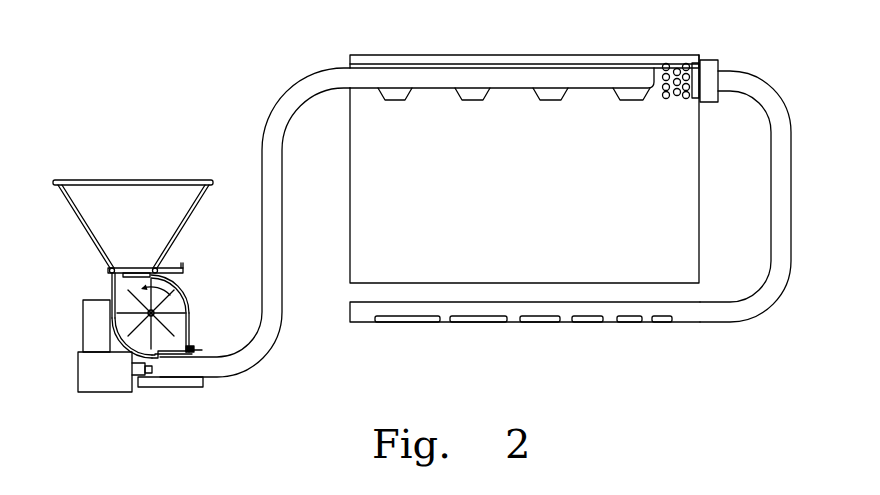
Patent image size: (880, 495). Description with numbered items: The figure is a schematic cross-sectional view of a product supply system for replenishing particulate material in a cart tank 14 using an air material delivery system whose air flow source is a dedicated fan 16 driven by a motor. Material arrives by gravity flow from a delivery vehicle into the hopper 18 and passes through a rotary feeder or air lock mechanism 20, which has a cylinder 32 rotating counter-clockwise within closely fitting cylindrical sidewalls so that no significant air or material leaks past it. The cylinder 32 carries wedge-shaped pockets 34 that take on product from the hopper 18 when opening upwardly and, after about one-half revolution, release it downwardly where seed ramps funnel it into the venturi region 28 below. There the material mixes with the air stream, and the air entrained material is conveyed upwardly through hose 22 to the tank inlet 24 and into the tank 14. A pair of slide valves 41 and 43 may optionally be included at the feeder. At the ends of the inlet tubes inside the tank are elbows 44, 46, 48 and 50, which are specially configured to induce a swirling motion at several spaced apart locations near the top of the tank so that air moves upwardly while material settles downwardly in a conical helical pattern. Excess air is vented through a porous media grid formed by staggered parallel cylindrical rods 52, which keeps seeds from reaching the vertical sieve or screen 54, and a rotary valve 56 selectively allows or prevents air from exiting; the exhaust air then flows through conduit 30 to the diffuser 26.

The tank 14 is at (699, 228).
The fan 16 is at (83, 332).
The hopper 18 is at (97, 180).
The rotary feeder or air lock mechanism 20 is at (180, 293).
The hose 22 is at (262, 160).
The tank inlet 24 is at (350, 66).
The diffuser 26 is at (515, 322).
The venturi region 28 is at (173, 378).
The conduit 30 is at (790, 245).
The cylinder 32 is at (135, 298).
The wedge-shaped pockets 34 is at (187, 321).
The slide valve 41 is at (183, 267).
The slide valve 43 is at (190, 350).
The elbow 44 is at (387, 100).
The elbow 46 is at (463, 100).
The elbow 48 is at (540, 100).
The elbow 50 is at (622, 100).
The staggered parallel cylindrical rods 52 is at (668, 97).
The vertical sieve or screen 54 is at (695, 62).
The rotary valve 56 is at (713, 65).